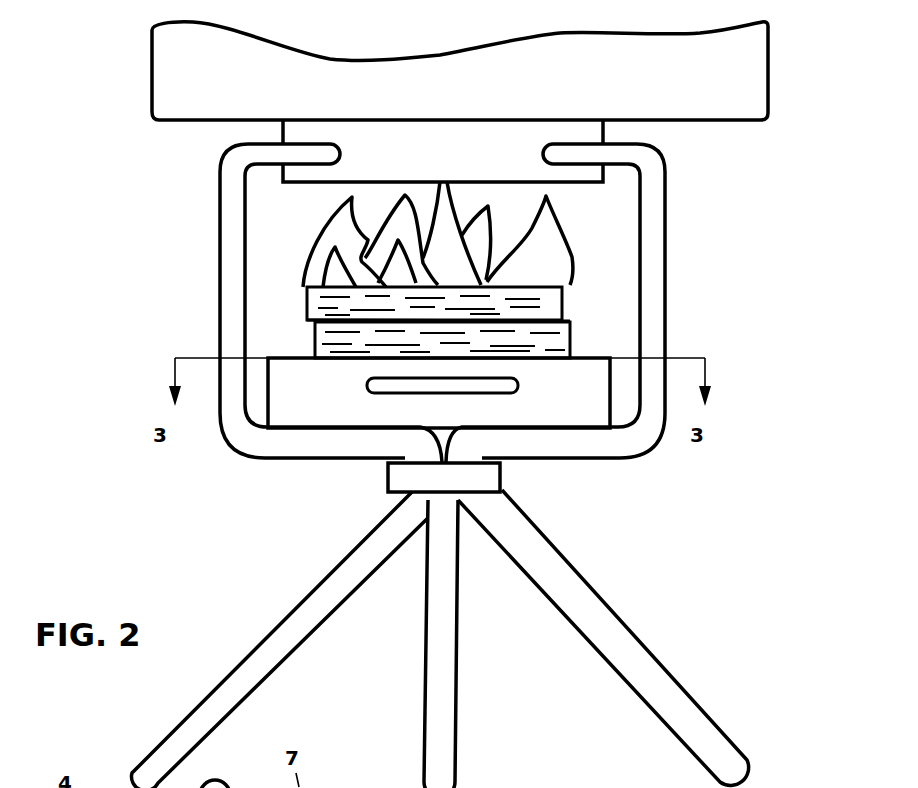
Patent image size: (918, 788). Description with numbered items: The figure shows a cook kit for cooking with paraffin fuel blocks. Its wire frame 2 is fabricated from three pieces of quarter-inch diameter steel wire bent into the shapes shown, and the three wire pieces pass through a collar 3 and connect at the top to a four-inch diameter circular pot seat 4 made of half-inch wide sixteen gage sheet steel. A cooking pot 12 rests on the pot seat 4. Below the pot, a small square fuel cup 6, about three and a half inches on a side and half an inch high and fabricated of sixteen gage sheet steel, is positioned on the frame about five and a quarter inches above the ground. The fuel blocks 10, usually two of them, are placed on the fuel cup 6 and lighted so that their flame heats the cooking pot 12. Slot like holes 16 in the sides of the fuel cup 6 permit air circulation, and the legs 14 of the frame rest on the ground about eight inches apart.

The wire frame 2 is at (672, 310).
The collar 3 is at (493, 478).
The pot seat 4 is at (528, 158).
The fuel cup 6 is at (293, 410).
The fuel blocks 10 is at (313, 340).
The cooking pot 12 is at (195, 89).
The legs 14 is at (553, 583).
The slot like holes 16 is at (518, 393).